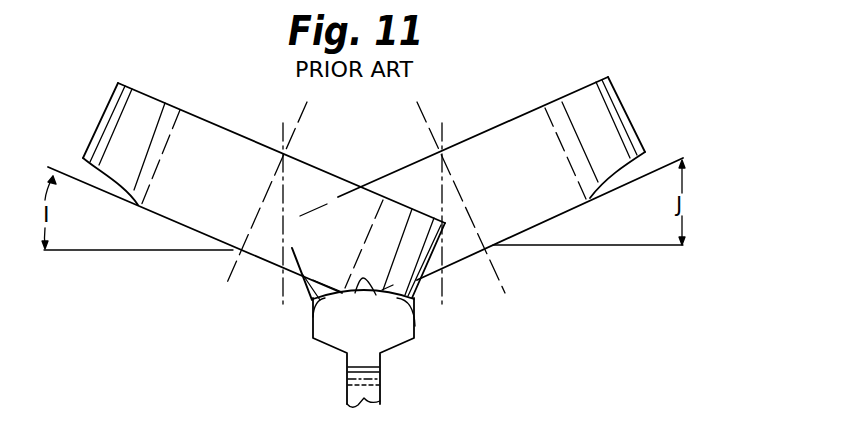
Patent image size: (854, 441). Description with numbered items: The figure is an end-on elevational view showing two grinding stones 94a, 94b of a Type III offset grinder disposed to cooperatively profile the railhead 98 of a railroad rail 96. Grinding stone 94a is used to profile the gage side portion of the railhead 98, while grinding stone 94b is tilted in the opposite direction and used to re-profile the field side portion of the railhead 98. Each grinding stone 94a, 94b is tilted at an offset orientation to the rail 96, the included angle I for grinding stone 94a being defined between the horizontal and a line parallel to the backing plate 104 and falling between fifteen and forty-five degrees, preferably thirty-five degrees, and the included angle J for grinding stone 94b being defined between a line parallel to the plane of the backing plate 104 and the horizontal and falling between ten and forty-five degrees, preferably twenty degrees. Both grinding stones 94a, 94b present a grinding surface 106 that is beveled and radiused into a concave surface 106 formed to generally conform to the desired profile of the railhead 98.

The grinding stone 94a is at (195, 115).
The grinding stone 94b is at (646, 153).
The rail 96 is at (347, 378).
The railhead 98 is at (376, 295).
The backing plate 104 is at (268, 256).
The grinding surface 106 is at (313, 311).